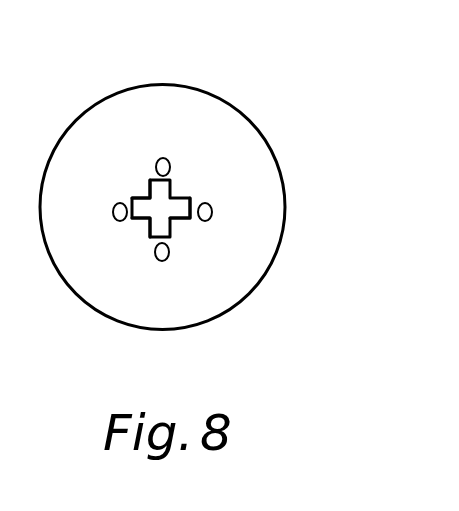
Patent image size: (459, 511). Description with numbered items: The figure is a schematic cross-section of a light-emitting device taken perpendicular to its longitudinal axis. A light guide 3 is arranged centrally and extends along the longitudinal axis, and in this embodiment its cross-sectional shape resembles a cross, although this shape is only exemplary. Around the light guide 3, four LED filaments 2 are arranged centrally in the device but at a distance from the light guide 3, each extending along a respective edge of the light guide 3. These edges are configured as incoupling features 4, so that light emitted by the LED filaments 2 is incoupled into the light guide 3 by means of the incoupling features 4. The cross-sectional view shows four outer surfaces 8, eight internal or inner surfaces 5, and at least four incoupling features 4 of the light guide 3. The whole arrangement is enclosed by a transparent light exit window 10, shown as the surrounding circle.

The LED filament 2 is at (212, 212).
The light guide 3 is at (162, 212).
The incoupling feature 4 is at (130, 202).
The internal or inner surface 5 is at (182, 203).
The outer surface 8 is at (148, 228).
The transparent light exit window 10 is at (248, 295).